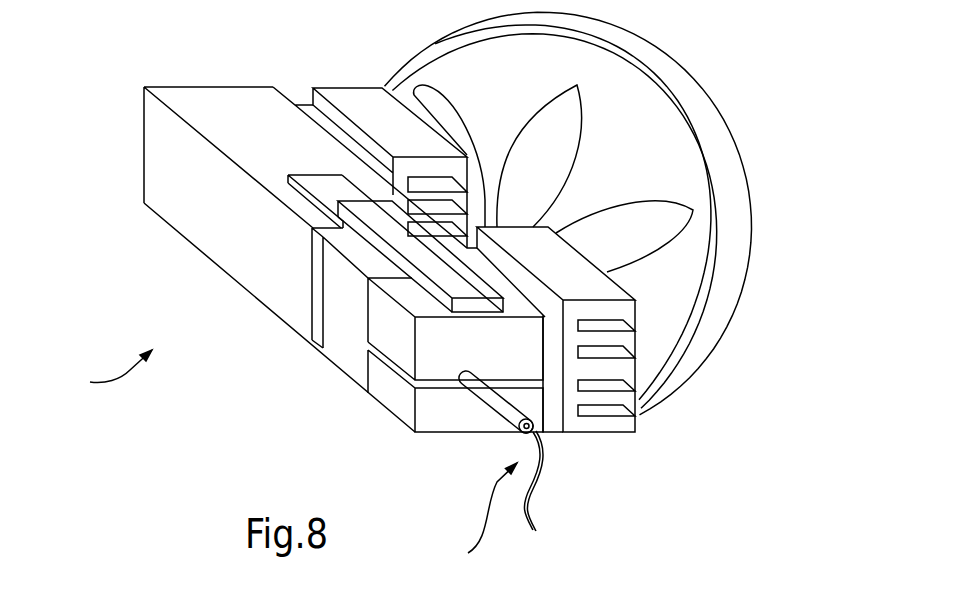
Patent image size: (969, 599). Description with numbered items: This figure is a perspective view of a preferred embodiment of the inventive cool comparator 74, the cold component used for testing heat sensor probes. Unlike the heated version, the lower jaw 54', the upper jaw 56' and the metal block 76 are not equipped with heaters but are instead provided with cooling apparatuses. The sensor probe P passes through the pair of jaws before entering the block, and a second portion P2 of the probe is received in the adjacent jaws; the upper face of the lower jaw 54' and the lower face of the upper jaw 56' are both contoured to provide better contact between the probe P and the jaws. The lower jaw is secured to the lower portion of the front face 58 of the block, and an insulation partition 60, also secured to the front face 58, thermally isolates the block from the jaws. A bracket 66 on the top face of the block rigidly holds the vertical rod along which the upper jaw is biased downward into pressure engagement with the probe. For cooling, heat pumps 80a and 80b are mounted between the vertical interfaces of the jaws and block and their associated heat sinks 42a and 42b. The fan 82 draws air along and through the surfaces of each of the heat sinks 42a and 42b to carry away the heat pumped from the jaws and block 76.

The heat sink 42a is at (357, 100).
The heat sink 42b is at (607, 423).
The lower jaw 54' is at (414, 411).
The upper jaw 56' is at (400, 352).
The front face 58 is at (310, 272).
The insulation partition 60 is at (316, 315).
The bracket 66 is at (325, 182).
The cool comparator 74 is at (105, 372).
The metal block 76 is at (183, 212).
The heat pump 80a is at (317, 117).
The heat pump 80b is at (552, 422).
The fan 82 is at (627, 58).
The sensor probe P is at (484, 515).
The second portion of the probe P2 is at (490, 413).